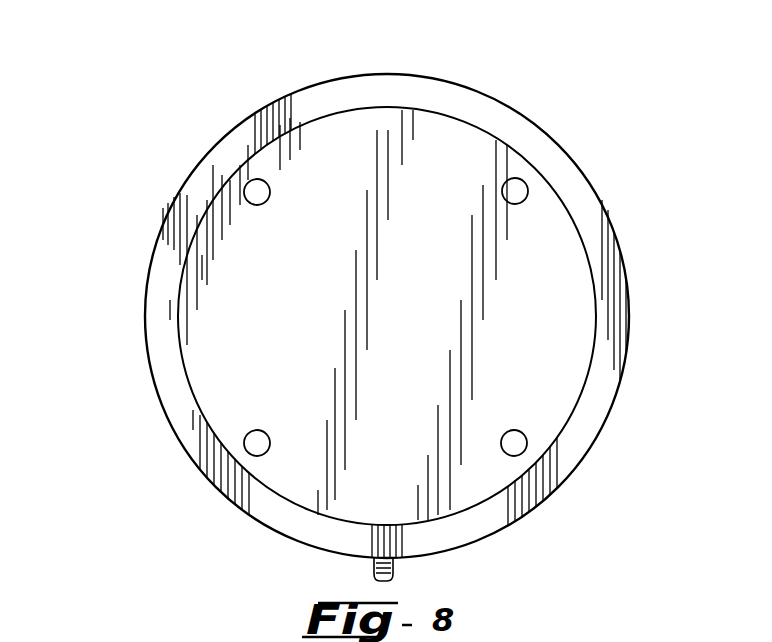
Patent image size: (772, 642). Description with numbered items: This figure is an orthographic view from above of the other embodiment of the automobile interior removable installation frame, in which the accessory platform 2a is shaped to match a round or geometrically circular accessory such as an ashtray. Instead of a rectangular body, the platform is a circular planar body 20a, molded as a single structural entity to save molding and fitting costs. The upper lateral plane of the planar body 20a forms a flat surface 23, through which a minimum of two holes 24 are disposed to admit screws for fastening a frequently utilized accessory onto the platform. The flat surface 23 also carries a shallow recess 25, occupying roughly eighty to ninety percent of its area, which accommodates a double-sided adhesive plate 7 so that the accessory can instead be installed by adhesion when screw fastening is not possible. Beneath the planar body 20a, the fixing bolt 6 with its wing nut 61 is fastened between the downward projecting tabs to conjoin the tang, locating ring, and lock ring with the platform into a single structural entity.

The accessory platform 2a is at (365, 295).
The circular planar body 20a is at (147, 368).
The flat surface 23 is at (583, 197).
The holes 24 is at (527, 175).
The shallow recess 25 is at (427, 128).
The fixing bolt 6 is at (371, 559).
The wing nut 61 is at (375, 576).
The double-sided adhesive plate 7 is at (503, 641).